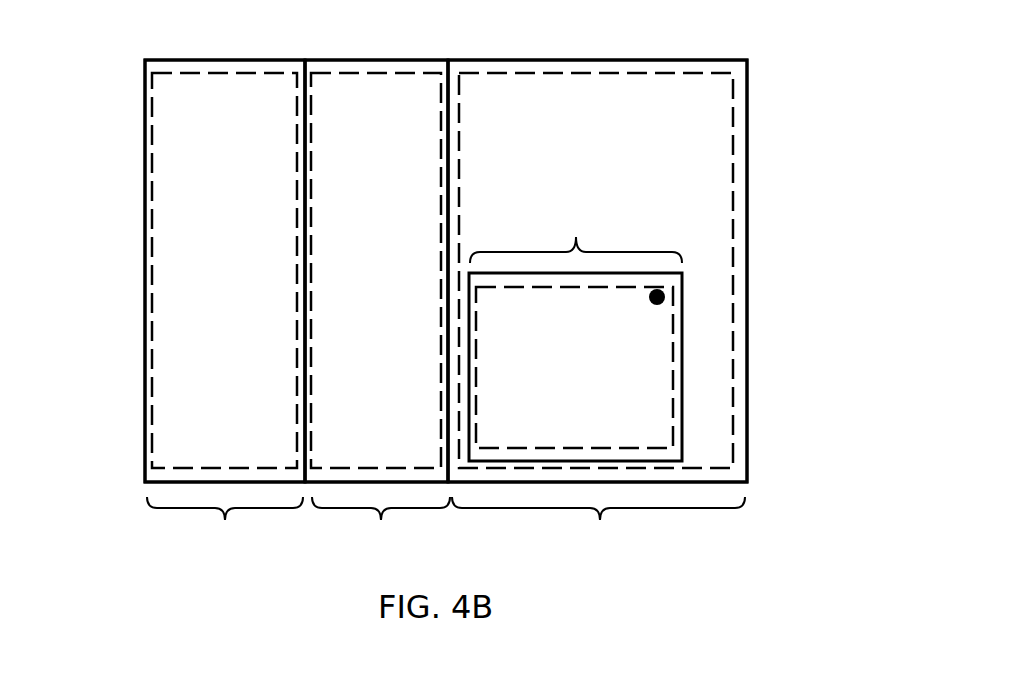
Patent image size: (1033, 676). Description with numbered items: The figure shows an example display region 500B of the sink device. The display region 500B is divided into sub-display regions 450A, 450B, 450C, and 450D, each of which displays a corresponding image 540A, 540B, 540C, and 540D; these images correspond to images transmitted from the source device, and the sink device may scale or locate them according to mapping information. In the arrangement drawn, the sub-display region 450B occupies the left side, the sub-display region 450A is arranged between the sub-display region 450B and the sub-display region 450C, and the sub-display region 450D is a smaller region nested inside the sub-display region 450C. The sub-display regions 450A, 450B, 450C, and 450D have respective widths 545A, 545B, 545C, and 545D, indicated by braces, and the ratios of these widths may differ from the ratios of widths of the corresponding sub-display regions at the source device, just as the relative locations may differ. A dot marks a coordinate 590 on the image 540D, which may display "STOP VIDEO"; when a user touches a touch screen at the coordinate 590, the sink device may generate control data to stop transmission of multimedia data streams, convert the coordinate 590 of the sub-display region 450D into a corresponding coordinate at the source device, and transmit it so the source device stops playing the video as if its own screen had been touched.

The display region 500B is at (147, 60).
The sub-display region 450A is at (365, 61).
The sub-display region 450B is at (232, 61).
The sub-display region 450C is at (563, 61).
The sub-display region 450D is at (683, 398).
The image 540A is at (349, 298).
The image 540B is at (198, 298).
The image 540C is at (567, 146).
The image 540D is at (549, 392).
The width 545A is at (381, 524).
The width 545B is at (225, 524).
The width 545C is at (598, 524).
The width 545D is at (576, 228).
The coordinate 590 is at (665, 297).